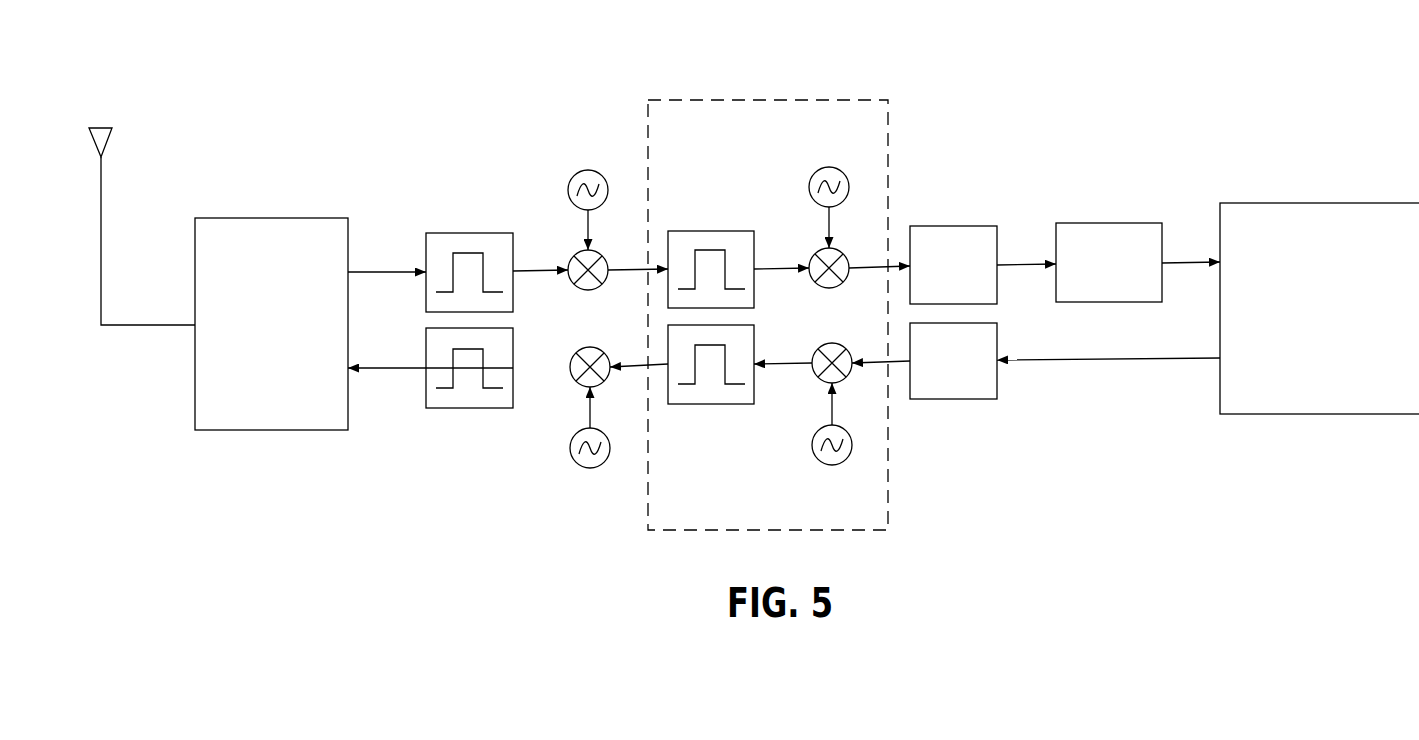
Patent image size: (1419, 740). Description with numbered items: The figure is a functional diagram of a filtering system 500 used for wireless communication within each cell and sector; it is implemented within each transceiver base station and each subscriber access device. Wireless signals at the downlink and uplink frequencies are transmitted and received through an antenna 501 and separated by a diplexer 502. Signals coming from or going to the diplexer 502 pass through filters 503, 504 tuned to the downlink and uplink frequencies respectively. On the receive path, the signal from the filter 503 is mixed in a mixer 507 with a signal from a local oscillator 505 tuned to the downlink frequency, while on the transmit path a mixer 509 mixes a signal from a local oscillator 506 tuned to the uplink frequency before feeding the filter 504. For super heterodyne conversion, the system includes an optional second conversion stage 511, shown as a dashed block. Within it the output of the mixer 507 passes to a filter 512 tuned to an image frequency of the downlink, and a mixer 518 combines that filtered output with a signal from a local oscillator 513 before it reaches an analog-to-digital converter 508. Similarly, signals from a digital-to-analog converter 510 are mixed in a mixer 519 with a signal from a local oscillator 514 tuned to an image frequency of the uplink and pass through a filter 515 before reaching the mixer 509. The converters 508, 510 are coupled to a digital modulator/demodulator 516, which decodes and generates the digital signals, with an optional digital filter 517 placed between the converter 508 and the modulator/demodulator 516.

The filtering system 500 is at (341, 500).
The antenna 501 is at (102, 127).
The diplexer 502 is at (272, 218).
The filter 503 is at (469, 233).
The filter 504 is at (470, 408).
The local oscillator 505 is at (588, 170).
The local oscillator 506 is at (590, 468).
The mixer 507 is at (602, 287).
The analog-to-digital (A/D) converter 508 is at (953, 226).
The mixer 509 is at (576, 356).
The digital-to-analog (D/A) converter 510 is at (955, 399).
The second conversion stage 511 is at (763, 100).
The filter 512 is at (708, 231).
The local oscillator 513 is at (829, 167).
The local oscillator 514 is at (833, 465).
The filter 515 is at (712, 404).
The digital modulator/demodulator 516 is at (1323, 203).
The digital filter 517 is at (1107, 223).
The mixer 518 is at (841, 283).
The mixer 519 is at (818, 352).